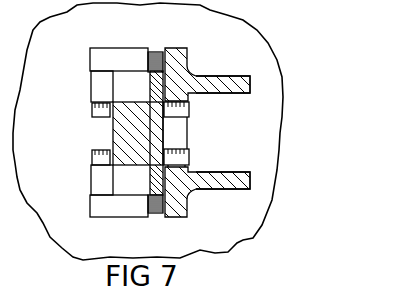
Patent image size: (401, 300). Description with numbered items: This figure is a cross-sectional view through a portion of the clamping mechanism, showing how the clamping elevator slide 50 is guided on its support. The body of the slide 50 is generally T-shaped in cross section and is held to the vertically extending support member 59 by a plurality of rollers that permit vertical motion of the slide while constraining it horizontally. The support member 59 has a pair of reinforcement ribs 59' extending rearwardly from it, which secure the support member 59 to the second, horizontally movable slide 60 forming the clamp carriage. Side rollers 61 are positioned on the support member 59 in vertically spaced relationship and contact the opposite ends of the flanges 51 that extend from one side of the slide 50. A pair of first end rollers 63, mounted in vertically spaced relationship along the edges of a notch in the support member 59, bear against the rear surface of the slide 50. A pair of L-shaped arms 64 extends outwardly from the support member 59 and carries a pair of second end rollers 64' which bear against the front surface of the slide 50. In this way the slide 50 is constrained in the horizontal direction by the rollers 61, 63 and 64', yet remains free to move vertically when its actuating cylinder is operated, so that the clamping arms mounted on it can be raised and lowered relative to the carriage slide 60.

The slide 50 is at (106, 133).
The flanges 51 is at (150, 82).
The support member 59 is at (207, 121).
The reinforcement ribs 59' is at (227, 116).
The slide 60 is at (231, 250).
The side rollers 61 is at (157, 51).
The first end rollers 63 is at (168, 148).
The L-shaped arms 64 is at (95, 145).
The second end rollers 64' is at (118, 130).